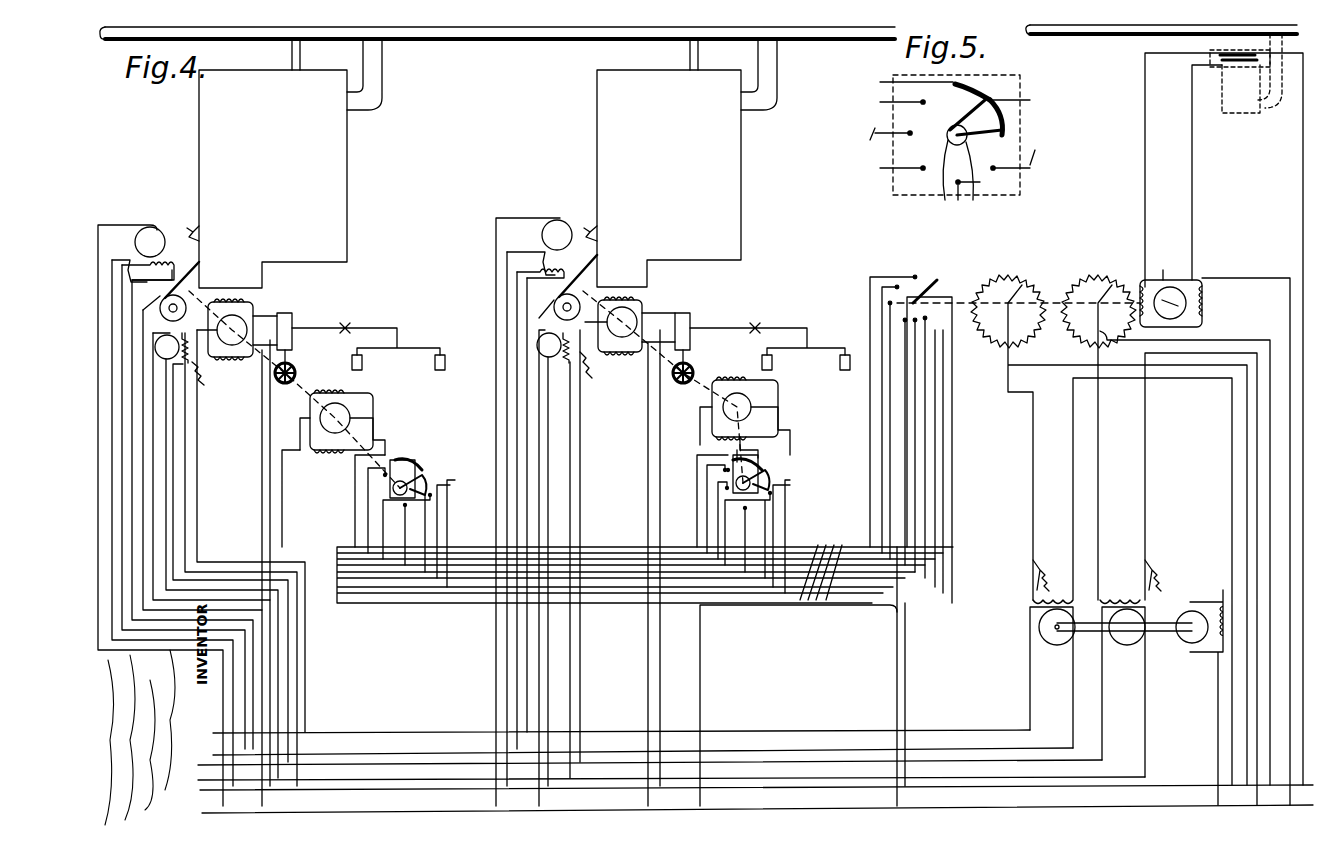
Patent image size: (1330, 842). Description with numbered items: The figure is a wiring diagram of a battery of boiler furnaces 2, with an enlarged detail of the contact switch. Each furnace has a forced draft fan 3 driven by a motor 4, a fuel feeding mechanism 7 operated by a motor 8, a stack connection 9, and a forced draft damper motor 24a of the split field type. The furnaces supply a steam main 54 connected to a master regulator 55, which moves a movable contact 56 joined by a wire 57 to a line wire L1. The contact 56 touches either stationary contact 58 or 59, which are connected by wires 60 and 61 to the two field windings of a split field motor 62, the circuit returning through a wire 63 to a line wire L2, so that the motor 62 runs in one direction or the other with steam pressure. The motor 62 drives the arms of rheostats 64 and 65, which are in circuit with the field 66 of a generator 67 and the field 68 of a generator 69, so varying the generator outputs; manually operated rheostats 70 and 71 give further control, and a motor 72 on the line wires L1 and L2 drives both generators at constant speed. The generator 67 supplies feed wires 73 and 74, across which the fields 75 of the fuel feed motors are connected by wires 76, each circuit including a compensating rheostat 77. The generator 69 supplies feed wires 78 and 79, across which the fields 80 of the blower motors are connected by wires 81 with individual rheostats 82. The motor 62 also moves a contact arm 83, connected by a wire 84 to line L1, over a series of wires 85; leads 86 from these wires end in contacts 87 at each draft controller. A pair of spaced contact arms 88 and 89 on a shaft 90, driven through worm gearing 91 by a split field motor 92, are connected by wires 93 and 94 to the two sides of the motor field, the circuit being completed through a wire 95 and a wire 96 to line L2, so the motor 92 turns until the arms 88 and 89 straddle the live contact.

In FIG. 4, the boiler furnace 2 is at (470, 163).
In FIG. 4, the forced draft fan 3 is at (370, 294).
In FIG. 4, the motor 4 is at (155, 348).
In FIG. 4, the fuel feeding mechanism 7 is at (190, 226).
In FIG. 4, the motor 8 is at (353, 238).
In FIG. 4, the stack connection 9 is at (382, 70).
In FIG. 4, the forced draft damper motor 24a is at (247, 316).
In FIG. 4, the steam main 54 is at (698, 47).
In FIG. 4, the master regulator 55 is at (1250, 116).
In FIG. 4, the movable contact 56 is at (1241, 89).
In FIG. 4, the wire 57 is at (1303, 172).
In FIG. 4, the stationary contact 58 is at (1238, 52).
In FIG. 4, the stationary contact 59 is at (1232, 68).
In FIG. 4, the wire 60 is at (1145, 118).
In FIG. 4, the wire 61 is at (1192, 128).
In FIG. 4, the split field motor 62 is at (1171, 289).
In FIG. 4, the wire 63 is at (1250, 278).
In FIG. 4, the rheostat 64 is at (1109, 519).
In FIG. 4, the rheostat 65 is at (1165, 519).
In FIG. 4, the field 66 is at (1132, 581).
In FIG. 4, the generator 67 is at (1057, 645).
In FIG. 4, the field 68 is at (1178, 579).
In FIG. 4, the generator 69 is at (1130, 645).
In FIG. 4, the manually operated rheostat 70 is at (1036, 558).
In FIG. 4, the manually operated rheostat 71 is at (1150, 562).
In FIG. 4, the motor 72 is at (1188, 612).
In FIG. 4, the feed wire 73 is at (1022, 715).
In FIG. 4, the feed wire 74 is at (1070, 720).
In FIG. 4, the field 75 is at (355, 263).
In FIG. 4, the wire 76 is at (150, 449).
In FIG. 4, the rheostat 77 is at (530, 286).
In FIG. 4, the feed wire 78 is at (1102, 692).
In FIG. 4, the feed wire 79 is at (1145, 715).
In FIG. 4, the field 80 is at (530, 360).
In FIG. 4, the wire 81 is at (185, 427).
In FIG. 4, the manually operated rheostat 82 is at (404, 374).
In FIG. 4, the contact arm 83 is at (927, 292).
In FIG. 4, the wire 84 is at (905, 628).
In FIG. 4, the wires 85 is at (645, 561).
In FIG. 4, the leads 86 is at (884, 277).
In FIG. 5, the leads 86 is at (960, 135).
In FIG. 5, the contacts 87 is at (965, 182).
In FIG. 4, the contact arm 88 is at (763, 455).
In FIG. 5, the contact arm 88 is at (993, 98).
In FIG. 4, the contact arm 89 is at (770, 482).
In FIG. 5, the contact arm 89 is at (1005, 125).
In FIG. 5, the shaft 90 is at (958, 145).
In FIG. 4, the worm gearing 91 is at (693, 370).
In FIG. 4, the split field motor 92 is at (752, 408).
In FIG. 4, the wire 93 is at (760, 438).
In FIG. 4, the wire 94 is at (790, 452).
In FIG. 4, the wire 95 is at (697, 430).
In FIG. 4, the wire 96 is at (885, 627).
In FIG. 4, the line wire L1 is at (1177, 790).
In FIG. 4, the line wire L2 is at (1165, 805).